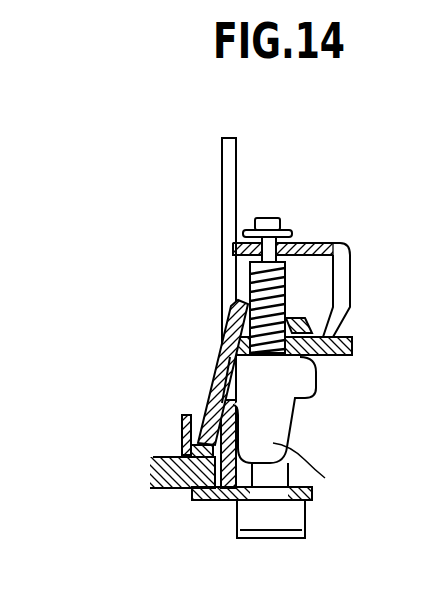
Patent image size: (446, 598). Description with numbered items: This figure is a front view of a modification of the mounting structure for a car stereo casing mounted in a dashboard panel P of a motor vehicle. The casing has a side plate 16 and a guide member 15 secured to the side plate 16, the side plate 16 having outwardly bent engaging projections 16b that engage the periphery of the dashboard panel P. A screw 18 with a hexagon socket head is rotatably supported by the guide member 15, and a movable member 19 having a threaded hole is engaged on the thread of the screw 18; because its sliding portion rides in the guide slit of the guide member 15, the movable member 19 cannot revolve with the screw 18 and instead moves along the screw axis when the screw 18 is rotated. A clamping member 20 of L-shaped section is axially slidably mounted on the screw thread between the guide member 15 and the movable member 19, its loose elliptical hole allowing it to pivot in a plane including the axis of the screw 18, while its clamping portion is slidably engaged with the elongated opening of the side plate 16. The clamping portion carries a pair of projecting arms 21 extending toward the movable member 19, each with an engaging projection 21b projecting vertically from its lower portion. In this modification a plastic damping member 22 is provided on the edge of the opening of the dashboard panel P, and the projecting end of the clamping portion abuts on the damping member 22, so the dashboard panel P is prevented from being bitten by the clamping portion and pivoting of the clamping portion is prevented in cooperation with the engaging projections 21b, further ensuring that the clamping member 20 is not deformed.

The guide member 15 is at (350, 290).
The side plate 16 is at (222, 263).
The engaging projections 16b is at (217, 500).
The screw 18 is at (284, 283).
The movable member 19 is at (348, 344).
The clamping member 20 is at (212, 378).
The projecting arms 21 is at (305, 377).
The engaging projection 21b is at (330, 469).
The damping member 22 is at (185, 416).
The dashboard panel P is at (162, 452).